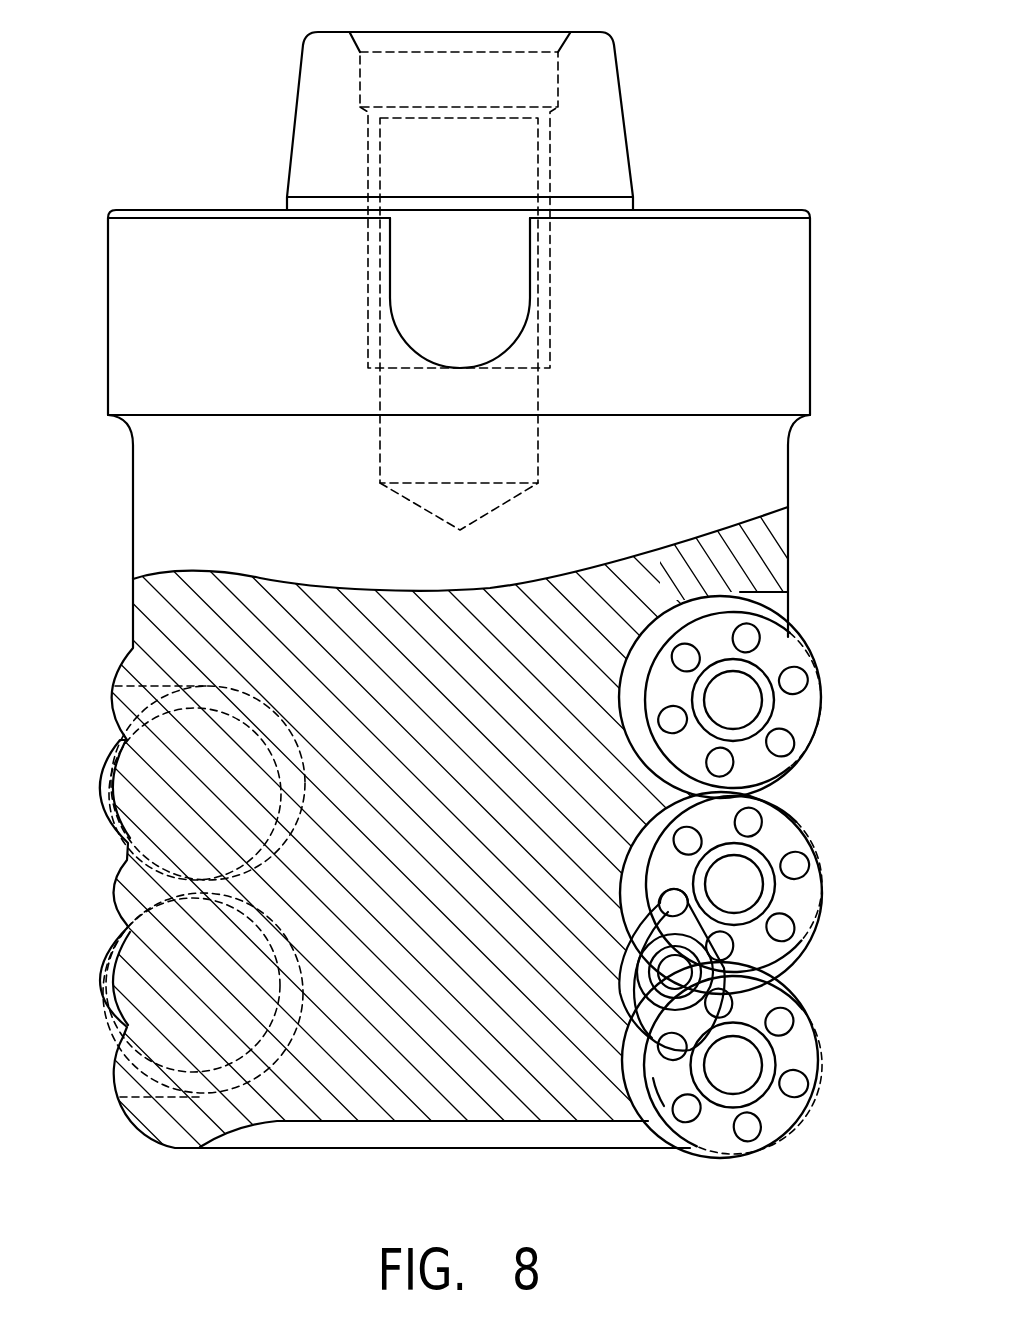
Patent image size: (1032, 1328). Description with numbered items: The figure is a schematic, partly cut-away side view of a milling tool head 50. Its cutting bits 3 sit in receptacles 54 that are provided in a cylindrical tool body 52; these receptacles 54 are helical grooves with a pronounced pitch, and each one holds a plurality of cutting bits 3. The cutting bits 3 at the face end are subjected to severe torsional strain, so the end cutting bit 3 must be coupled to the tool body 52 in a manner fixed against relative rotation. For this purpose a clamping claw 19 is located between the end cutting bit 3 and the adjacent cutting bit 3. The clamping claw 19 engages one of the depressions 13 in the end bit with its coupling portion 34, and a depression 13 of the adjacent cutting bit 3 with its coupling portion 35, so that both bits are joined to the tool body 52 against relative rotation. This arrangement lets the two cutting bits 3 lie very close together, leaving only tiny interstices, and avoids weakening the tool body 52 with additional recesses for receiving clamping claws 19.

The cutting bit 3 is at (822, 702).
The depression 13 is at (782, 925).
The clamping claw 19 is at (652, 1022).
The coupling portion 34 is at (667, 1092).
The coupling portion 35 is at (727, 972).
The milling tool head 50 is at (694, 100).
The tool body 52 is at (716, 314).
The receptacle 54 is at (469, 872).